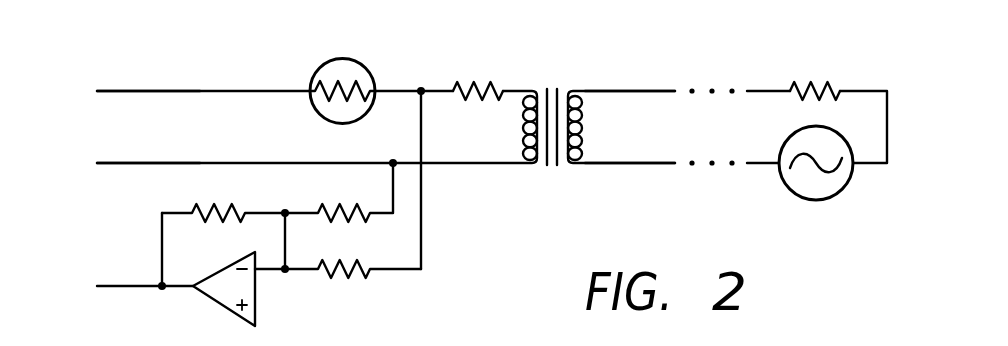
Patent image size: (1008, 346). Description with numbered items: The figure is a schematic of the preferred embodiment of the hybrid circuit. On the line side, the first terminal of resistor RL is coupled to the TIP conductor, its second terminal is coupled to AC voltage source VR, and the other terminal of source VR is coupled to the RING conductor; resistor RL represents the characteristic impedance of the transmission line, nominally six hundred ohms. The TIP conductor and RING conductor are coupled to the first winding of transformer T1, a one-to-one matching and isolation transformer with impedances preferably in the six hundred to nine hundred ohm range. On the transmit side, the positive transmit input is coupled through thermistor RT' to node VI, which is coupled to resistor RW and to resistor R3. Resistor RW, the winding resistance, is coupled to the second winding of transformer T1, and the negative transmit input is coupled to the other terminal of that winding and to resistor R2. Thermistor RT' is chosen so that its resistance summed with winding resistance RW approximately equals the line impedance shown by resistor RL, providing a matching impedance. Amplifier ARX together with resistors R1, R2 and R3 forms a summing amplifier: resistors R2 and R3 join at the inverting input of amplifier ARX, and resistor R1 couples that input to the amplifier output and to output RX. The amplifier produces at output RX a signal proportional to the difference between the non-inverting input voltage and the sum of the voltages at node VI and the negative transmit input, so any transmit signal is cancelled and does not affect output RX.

The thermistor RT' is at (342, 75).
The node V1 VI is at (423, 160).
The resistor RW (winding resistance) RW is at (478, 76).
The transformer T1 is at (552, 108).
The TIP conductor TIP is at (630, 71).
The RING conductor RING is at (630, 180).
The resistor RL is at (815, 75).
The AC voltage source VR is at (816, 182).
The resistor R1 is at (223, 199).
The resistor R2 is at (341, 190).
The resistor R3 is at (353, 288).
The output RX is at (128, 285).
The amplifier ARX is at (240, 316).